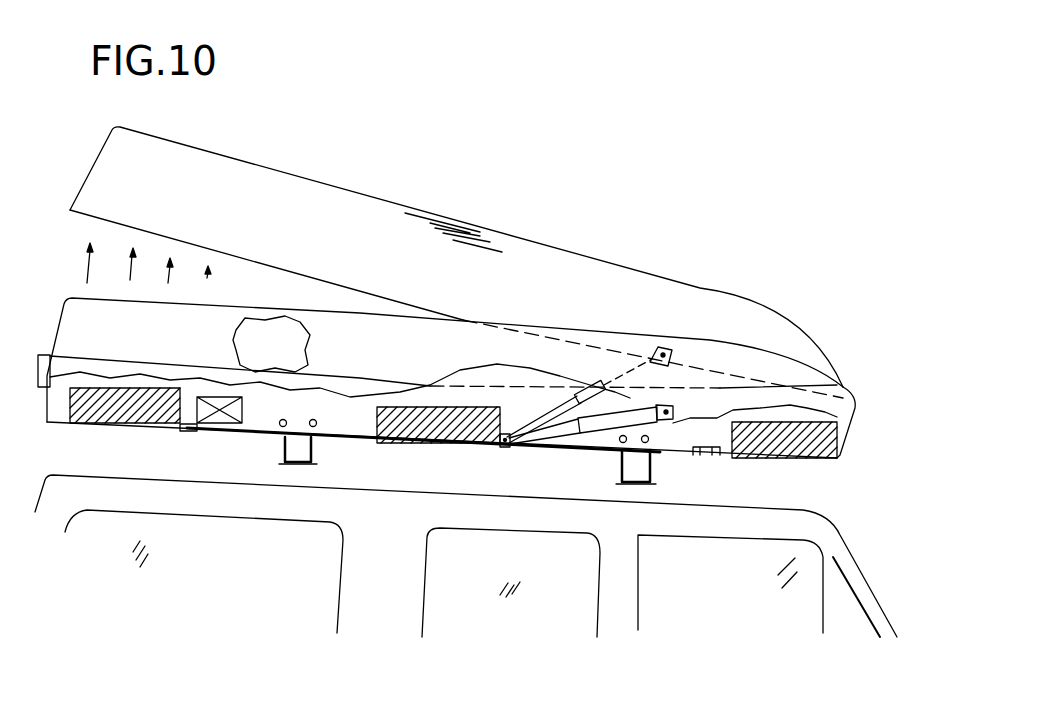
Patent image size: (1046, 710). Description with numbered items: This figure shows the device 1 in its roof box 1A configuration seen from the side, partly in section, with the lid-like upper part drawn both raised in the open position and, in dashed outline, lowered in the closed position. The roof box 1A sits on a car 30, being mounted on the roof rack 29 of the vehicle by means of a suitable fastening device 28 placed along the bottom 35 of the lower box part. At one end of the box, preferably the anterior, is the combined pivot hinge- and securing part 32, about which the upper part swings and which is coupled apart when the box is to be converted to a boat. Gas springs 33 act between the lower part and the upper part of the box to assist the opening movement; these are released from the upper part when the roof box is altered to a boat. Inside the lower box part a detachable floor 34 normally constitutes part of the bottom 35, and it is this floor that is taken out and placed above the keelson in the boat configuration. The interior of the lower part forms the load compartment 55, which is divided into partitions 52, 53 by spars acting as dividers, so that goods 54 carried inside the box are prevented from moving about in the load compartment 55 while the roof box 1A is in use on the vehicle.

The device 1 is at (433, 158).
The roof box 1A is at (676, 209).
The fastening device 28 is at (283, 463).
The roof rack 29 is at (298, 476).
The car 30 is at (522, 656).
The combined pivot hinge- and securing part 32 is at (845, 408).
The gas springs 33 is at (666, 345).
The detachable floor 34 is at (550, 451).
The bottom 35 is at (168, 434).
The partition 52 is at (323, 424).
The partition 53 is at (727, 442).
The goods 54 is at (186, 430).
The load compartment 55 is at (290, 366).